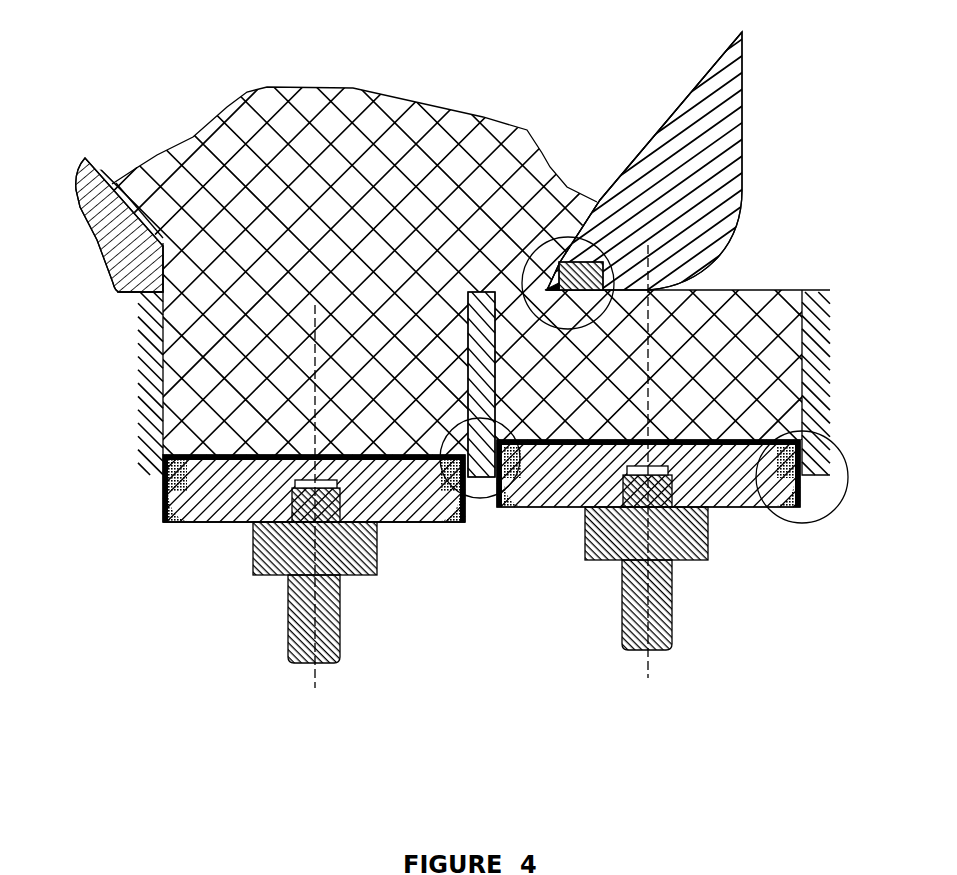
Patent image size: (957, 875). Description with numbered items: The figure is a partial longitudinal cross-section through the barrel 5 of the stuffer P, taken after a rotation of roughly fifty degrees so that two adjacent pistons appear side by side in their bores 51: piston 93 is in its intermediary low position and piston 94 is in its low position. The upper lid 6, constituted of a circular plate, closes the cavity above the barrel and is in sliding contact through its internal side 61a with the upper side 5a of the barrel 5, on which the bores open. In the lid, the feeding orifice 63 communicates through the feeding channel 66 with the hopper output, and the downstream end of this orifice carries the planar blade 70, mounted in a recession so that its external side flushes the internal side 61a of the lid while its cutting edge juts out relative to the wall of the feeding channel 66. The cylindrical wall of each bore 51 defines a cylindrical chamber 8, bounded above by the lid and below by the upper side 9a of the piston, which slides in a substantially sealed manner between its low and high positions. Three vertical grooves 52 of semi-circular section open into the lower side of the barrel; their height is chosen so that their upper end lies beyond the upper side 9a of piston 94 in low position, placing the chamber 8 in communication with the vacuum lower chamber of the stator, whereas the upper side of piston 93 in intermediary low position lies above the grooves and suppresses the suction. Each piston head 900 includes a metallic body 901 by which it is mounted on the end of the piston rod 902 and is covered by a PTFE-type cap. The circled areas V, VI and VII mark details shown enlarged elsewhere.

The stuffer P is at (352, 100).
The barrel 5 is at (150, 336).
The upper side of the barrel 5a is at (483, 290).
The upper lid 6 is at (728, 131).
The cylindrical chamber 8 is at (183, 355).
The upper side of the piston 9a is at (690, 441).
The bore 51 is at (163, 407).
The vertical groove 52 is at (237, 457).
The internal side of the lid 61a is at (132, 293).
The feeding orifice 63 is at (161, 260).
The feeding channel 66 is at (694, 89).
The planar blade 70 is at (581, 278).
The piston 93 is at (567, 510).
The piston 94 is at (220, 523).
The piston head 900 is at (195, 524).
The metallic body 901 is at (408, 510).
The piston rod 902 is at (340, 650).
The detail circle V is at (477, 507).
The detail circle VI is at (817, 520).
The detail circle VII is at (662, 287).